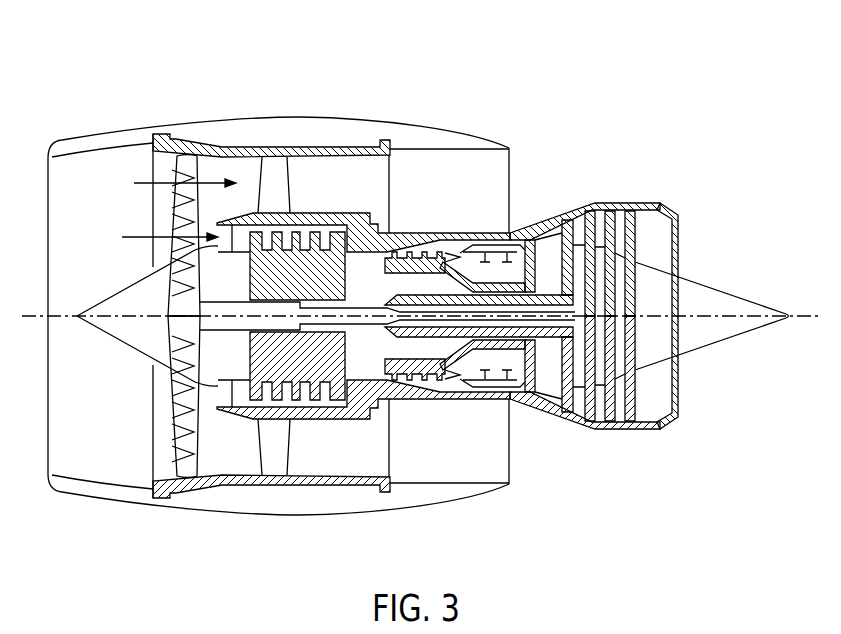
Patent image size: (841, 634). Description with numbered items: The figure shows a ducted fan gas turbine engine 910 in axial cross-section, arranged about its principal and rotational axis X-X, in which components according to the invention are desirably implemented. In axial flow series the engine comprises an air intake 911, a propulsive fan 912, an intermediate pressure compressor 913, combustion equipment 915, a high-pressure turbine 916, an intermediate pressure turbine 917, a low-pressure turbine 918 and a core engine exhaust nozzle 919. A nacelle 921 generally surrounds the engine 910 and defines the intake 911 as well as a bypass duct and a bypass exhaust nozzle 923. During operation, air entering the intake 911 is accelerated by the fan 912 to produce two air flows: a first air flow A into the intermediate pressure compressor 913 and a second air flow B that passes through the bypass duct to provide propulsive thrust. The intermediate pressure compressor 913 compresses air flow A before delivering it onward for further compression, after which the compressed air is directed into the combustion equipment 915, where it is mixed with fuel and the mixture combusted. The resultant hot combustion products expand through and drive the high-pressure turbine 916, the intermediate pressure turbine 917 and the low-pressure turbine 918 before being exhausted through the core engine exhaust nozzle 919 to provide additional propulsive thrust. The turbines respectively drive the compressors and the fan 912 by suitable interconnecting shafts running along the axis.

The ducted fan gas turbine engine 910 is at (419, 261).
The air intake 911 is at (98, 148).
The propulsive fan 912 is at (178, 440).
The intermediate pressure compressor 913 is at (312, 402).
The combustion equipment 915 is at (477, 380).
The high-pressure turbine 916 is at (520, 397).
The intermediate pressure turbine 917 is at (563, 225).
The low-pressure turbine 918 is at (573, 423).
The core engine exhaust nozzle 919 is at (675, 206).
The nacelle 921 is at (310, 118).
The bypass exhaust nozzle 923 is at (510, 143).